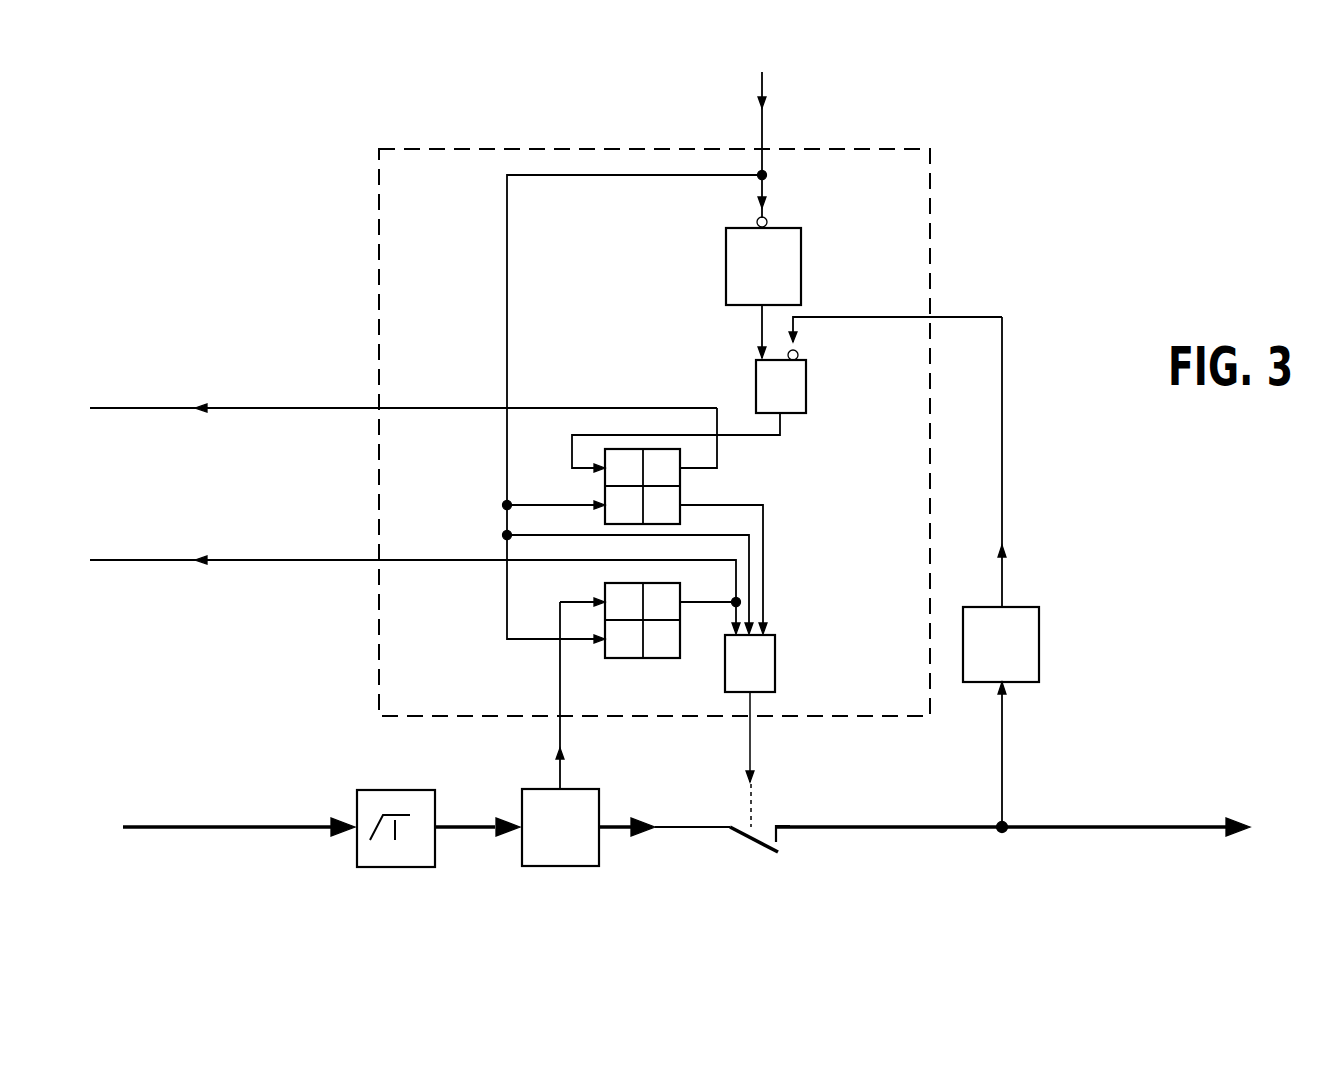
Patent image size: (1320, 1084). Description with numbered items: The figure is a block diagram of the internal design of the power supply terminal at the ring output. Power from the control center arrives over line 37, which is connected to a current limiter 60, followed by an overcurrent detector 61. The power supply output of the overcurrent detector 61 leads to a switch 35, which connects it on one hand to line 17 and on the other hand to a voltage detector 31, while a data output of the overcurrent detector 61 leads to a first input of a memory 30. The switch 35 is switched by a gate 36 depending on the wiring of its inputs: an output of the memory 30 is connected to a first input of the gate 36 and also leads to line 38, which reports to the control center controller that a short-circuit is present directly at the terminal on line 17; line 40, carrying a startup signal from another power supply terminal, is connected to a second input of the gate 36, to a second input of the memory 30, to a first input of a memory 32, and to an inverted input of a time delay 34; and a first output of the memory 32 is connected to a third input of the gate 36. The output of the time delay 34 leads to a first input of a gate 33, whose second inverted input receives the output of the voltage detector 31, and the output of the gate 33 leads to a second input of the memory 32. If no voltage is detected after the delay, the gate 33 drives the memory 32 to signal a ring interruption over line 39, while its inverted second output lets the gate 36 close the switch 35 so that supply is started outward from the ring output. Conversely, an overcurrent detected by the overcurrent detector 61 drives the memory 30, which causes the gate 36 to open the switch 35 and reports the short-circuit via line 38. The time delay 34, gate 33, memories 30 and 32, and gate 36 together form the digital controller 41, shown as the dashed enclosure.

The line 17 is at (1092, 830).
The memory 30 is at (625, 658).
The voltage detector 31 is at (1039, 643).
The memory 32 is at (680, 481).
The gate 33 is at (806, 385).
The time delay 34 is at (801, 255).
The switch 35 is at (737, 836).
The gate 36 is at (775, 660).
The line 37 is at (188, 830).
The line 38 is at (273, 557).
The line 39 is at (270, 405).
The line 40 is at (760, 85).
The digital controller 41 is at (930, 178).
The current limiter 60 is at (355, 803).
The overcurrent detector 61 is at (547, 867).